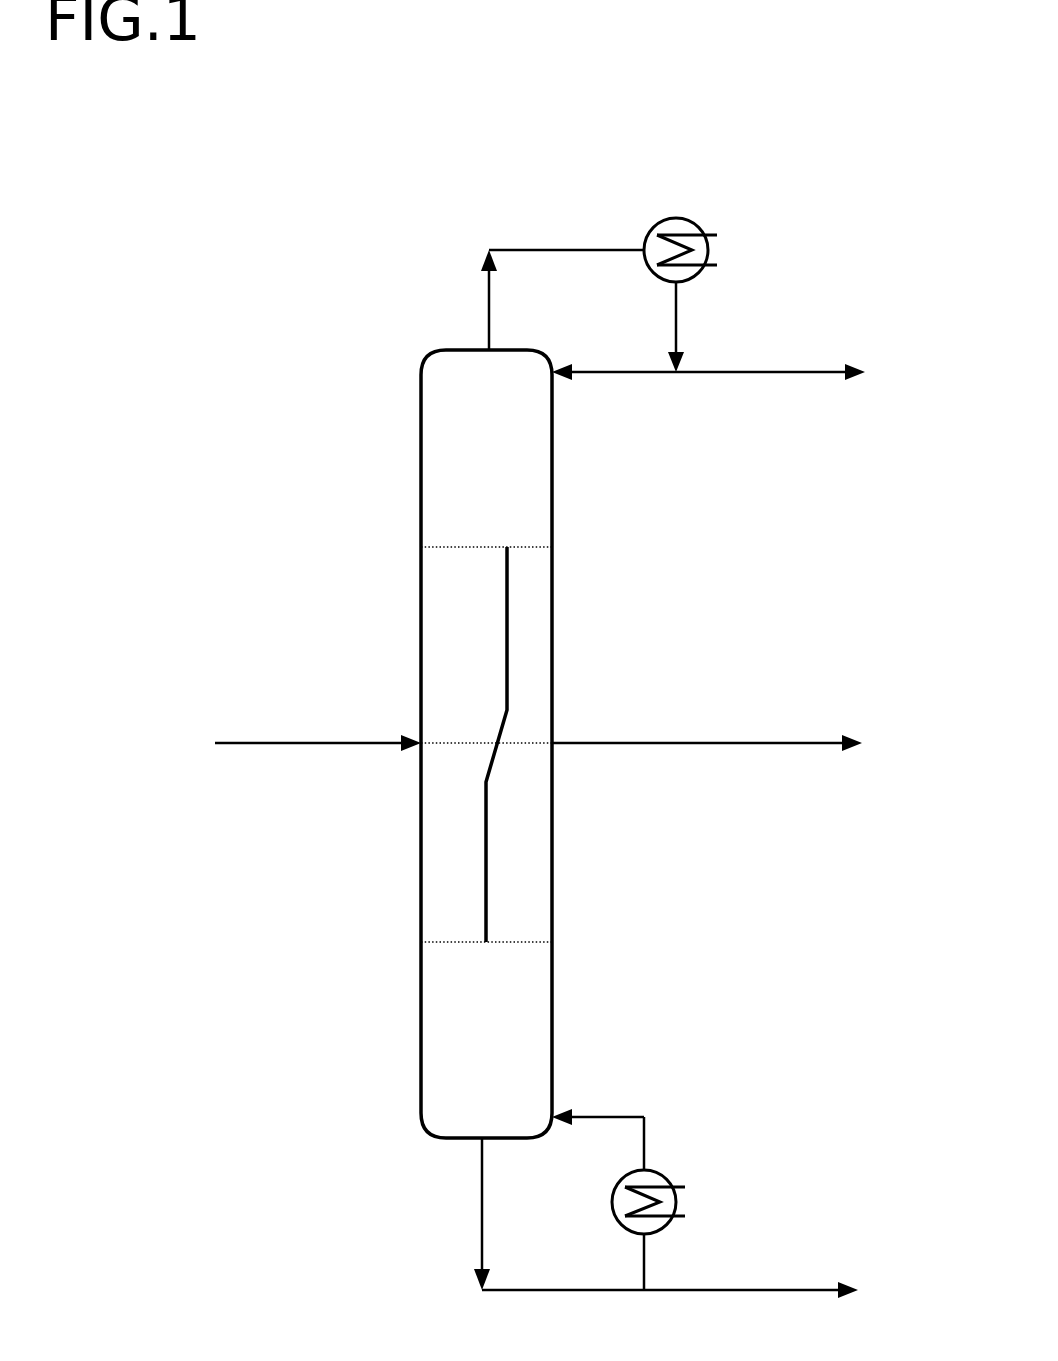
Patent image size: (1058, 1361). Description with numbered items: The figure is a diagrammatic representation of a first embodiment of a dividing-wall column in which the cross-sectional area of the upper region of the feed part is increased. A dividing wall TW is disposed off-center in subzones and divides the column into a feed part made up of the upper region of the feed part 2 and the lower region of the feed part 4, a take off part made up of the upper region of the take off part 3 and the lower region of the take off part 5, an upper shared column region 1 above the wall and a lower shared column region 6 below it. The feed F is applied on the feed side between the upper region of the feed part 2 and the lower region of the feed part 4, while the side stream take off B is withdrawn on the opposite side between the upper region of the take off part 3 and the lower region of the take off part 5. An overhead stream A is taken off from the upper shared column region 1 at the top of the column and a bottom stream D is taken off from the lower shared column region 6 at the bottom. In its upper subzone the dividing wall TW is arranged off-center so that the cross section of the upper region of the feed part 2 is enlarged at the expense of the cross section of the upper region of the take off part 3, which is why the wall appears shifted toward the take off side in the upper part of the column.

The upper shared column region 1 is at (486, 448).
The upper region of the feed part 2 is at (446, 645).
The upper region of the take off part 3 is at (536, 645).
The lower region of the feed part 4 is at (486, 842).
The lower region of the take off part 5 is at (532, 842).
The lower shared column region 6 is at (486, 1040).
The dividing wall TW is at (507, 600).
The feed F is at (304, 741).
The overhead stream A is at (685, 303).
The side stream take off B is at (719, 741).
The bottom stream D is at (679, 1208).